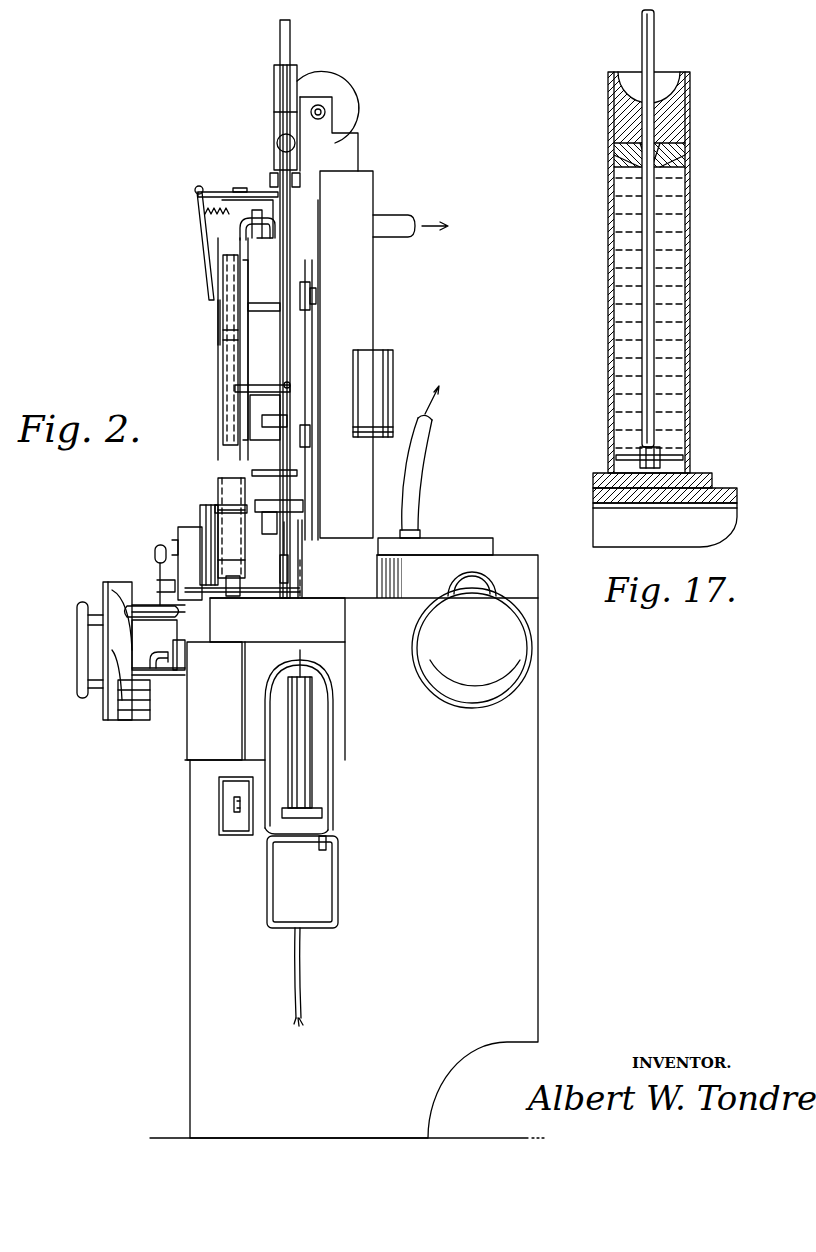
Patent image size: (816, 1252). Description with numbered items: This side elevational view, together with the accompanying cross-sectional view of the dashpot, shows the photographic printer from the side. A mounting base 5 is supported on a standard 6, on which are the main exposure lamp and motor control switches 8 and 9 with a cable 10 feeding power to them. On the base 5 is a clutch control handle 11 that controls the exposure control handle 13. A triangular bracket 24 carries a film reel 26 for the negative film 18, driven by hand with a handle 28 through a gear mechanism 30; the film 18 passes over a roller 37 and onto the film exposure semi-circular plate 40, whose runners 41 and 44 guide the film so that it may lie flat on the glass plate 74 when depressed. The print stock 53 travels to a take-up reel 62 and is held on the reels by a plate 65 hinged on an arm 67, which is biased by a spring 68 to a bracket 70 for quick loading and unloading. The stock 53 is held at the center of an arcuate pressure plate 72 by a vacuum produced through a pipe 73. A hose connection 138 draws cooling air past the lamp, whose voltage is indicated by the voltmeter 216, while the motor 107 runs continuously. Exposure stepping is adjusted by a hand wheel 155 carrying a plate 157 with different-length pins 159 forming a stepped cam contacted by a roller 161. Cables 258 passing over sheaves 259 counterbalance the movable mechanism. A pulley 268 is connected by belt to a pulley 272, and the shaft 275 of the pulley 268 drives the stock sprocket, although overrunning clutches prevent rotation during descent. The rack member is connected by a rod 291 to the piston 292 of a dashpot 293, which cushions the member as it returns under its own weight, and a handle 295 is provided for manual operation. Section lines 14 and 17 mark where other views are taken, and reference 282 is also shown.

In FIG. 2, the mounting base 5 is at (208, 688).
In FIG. 2, the standard 6 is at (194, 994).
In FIG. 2, the main exposure lamp and motor control switch 8 is at (230, 818).
In FIG. 2, the main exposure lamp and motor control switch 9 is at (325, 903).
In FIG. 2, the cable 10 is at (302, 977).
In FIG. 2, the clutch control handle 11 is at (153, 668).
In FIG. 2, the exposure control handle 13 is at (165, 620).
In FIG. 2, the vertical slide bar 14 is at (288, 266).
In FIG. 2, the section line 17 is at (300, 662).
In FIG. 2, the negative film 18 is at (222, 526).
In FIG. 2, the triangular bracket 24 is at (240, 720).
In FIG. 2, the film reel 26 is at (218, 505).
In FIG. 2, the handle 28 is at (127, 611).
In FIG. 2, the gear mechanism 30 is at (178, 536).
In FIG. 2, the roller 37 is at (233, 598).
In FIG. 2, the film exposure semi-circular plate 40 is at (200, 505).
In FIG. 2, the runner 41 is at (207, 505).
In FIG. 2, the runner 44 is at (265, 500).
In FIG. 2, the print stock 53 is at (230, 382).
In FIG. 2, the take-up reel 62 is at (240, 358).
In FIG. 2, the plate 65 is at (222, 334).
In FIG. 2, the arm 67 is at (208, 278).
In FIG. 2, the spring 68 is at (213, 192).
In FIG. 2, the bracket 70 is at (237, 186).
In FIG. 2, the pressure plate 72 is at (244, 414).
In FIG. 2, the pipe 73 is at (240, 250).
In FIG. 2, the glass plate 74 is at (213, 505).
In FIG. 2, the motor 107 is at (520, 658).
In FIG. 2, the hose connection 138 is at (412, 475).
In FIG. 2, the hand wheel 155 is at (82, 700).
In FIG. 2, the plate 157 is at (110, 718).
In FIG. 2, the pins 159 is at (128, 720).
In FIG. 2, the roller 161 is at (160, 596).
In FIG. 2, the voltmeter 216 is at (372, 369).
In FIG. 2, the cable 258 is at (359, 147).
In FIG. 2, the sheave 259 is at (350, 96).
In FIG. 2, the pulley 268 is at (311, 438).
In FIG. 2, the pulley 272 is at (310, 290).
In FIG. 2, the shaft 275 is at (313, 333).
In FIG. 2, the bracket 282 is at (288, 565).
In FIG. 2, the rod 291 is at (303, 585).
In FIG. 17, the rod 291 is at (655, 44).
In FIG. 17, the piston 292 is at (670, 455).
In FIG. 2, the dashpot 293 is at (326, 738).
In FIG. 17, the dashpot 293 is at (595, 409).
In FIG. 2, the handle 295 is at (291, 384).